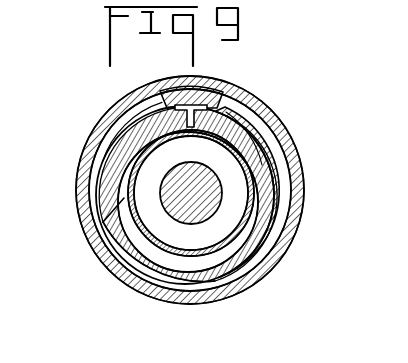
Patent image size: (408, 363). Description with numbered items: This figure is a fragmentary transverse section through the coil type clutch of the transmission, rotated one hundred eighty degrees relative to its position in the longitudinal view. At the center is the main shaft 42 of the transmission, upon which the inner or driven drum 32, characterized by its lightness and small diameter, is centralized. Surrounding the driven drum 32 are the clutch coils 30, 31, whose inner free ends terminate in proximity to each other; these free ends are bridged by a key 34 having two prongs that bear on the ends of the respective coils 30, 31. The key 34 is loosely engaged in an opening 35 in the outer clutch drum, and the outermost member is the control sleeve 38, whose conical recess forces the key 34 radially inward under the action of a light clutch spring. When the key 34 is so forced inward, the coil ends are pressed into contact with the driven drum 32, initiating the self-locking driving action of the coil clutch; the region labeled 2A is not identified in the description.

The clearance space 2A is at (103, 222).
The clutch coil 30 is at (120, 150).
The clutch coil 31 is at (260, 160).
The driven drum 32 is at (242, 238).
The key 34 is at (203, 96).
The opening 35 is at (163, 103).
The control sleeve 38 is at (272, 117).
The main shaft 42 is at (223, 203).